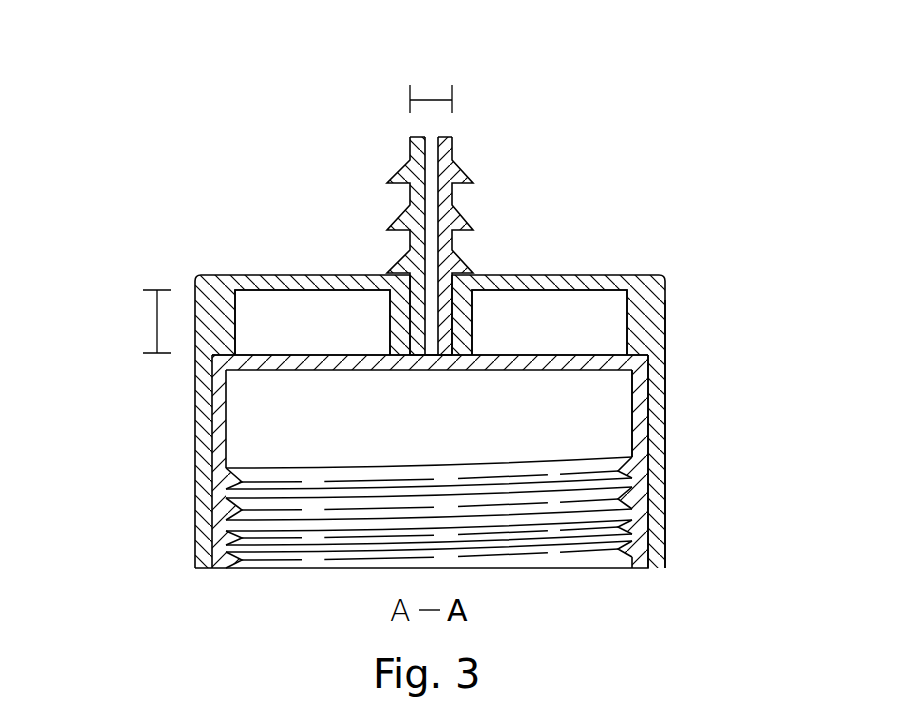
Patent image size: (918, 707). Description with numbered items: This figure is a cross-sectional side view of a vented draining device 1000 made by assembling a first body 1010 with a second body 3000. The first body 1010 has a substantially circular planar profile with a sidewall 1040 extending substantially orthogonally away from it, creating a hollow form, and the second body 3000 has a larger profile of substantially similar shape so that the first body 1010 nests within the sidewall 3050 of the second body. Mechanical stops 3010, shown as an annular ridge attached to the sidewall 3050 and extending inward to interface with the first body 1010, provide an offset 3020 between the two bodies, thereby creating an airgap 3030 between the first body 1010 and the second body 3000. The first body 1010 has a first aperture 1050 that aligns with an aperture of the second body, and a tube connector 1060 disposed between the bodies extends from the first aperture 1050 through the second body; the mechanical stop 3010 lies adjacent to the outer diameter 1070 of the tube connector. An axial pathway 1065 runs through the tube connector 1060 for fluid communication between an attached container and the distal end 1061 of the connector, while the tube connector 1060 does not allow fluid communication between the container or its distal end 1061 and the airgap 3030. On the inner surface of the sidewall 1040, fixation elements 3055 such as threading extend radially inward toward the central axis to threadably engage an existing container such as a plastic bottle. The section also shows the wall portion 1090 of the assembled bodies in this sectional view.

The device 1000 is at (706, 127).
The first body 1010 is at (587, 372).
The sidewall 1040 is at (640, 423).
The first aperture 1050 is at (472, 263).
The tube connector 1060 is at (455, 155).
The distal end 1061 is at (411, 50).
The axial pathway 1065 is at (433, 140).
The outer diameter 1070 is at (390, 97).
The top plate 1090 is at (287, 365).
The second body 3000 is at (640, 275).
The mechanical stop 3010 is at (472, 355).
The offset 3020 is at (157, 320).
The airgap 3030 is at (317, 299).
The sidewall 3050 is at (660, 483).
The fixation elements 3055 is at (278, 548).